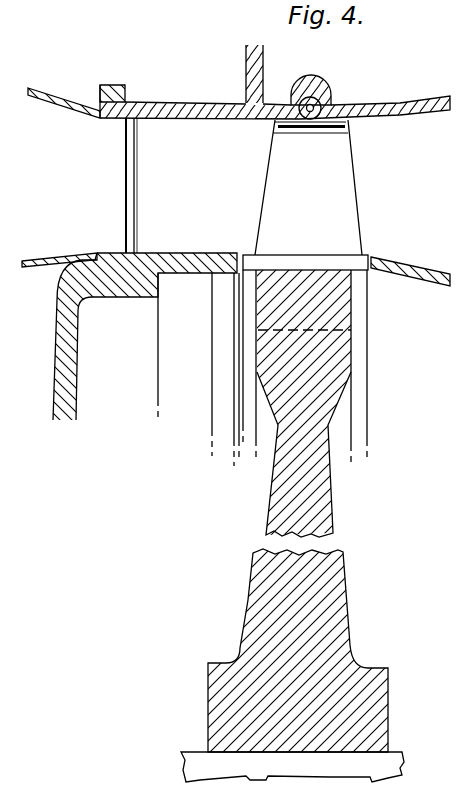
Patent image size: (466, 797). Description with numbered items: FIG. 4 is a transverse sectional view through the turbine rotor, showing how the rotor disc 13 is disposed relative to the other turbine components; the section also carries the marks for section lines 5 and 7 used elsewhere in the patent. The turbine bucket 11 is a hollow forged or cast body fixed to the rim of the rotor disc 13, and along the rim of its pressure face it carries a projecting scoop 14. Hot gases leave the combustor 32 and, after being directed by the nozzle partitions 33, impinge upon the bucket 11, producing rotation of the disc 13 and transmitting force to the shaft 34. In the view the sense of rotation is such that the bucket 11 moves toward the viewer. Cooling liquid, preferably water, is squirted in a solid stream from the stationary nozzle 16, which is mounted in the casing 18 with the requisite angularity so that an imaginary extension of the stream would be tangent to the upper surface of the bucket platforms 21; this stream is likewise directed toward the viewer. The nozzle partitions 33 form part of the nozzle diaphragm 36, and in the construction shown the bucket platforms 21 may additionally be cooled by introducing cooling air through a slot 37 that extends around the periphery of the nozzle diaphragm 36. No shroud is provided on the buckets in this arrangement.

The section line 5- 5 is at (253, 123).
The section line 7- 7 is at (322, 793).
The turbine bucket 11 is at (353, 197).
The turbine rotor disc 13 is at (328, 506).
The scoop 14 is at (312, 133).
The nozzle 16 is at (310, 107).
The casing 18 is at (343, 113).
The bucket platform 21 is at (311, 256).
The combustor 32 is at (107, 233).
The nozzle partition 33 is at (197, 207).
The shaft 34 is at (193, 757).
The nozzle diaphragm 36 is at (181, 257).
The slot 37 is at (236, 275).